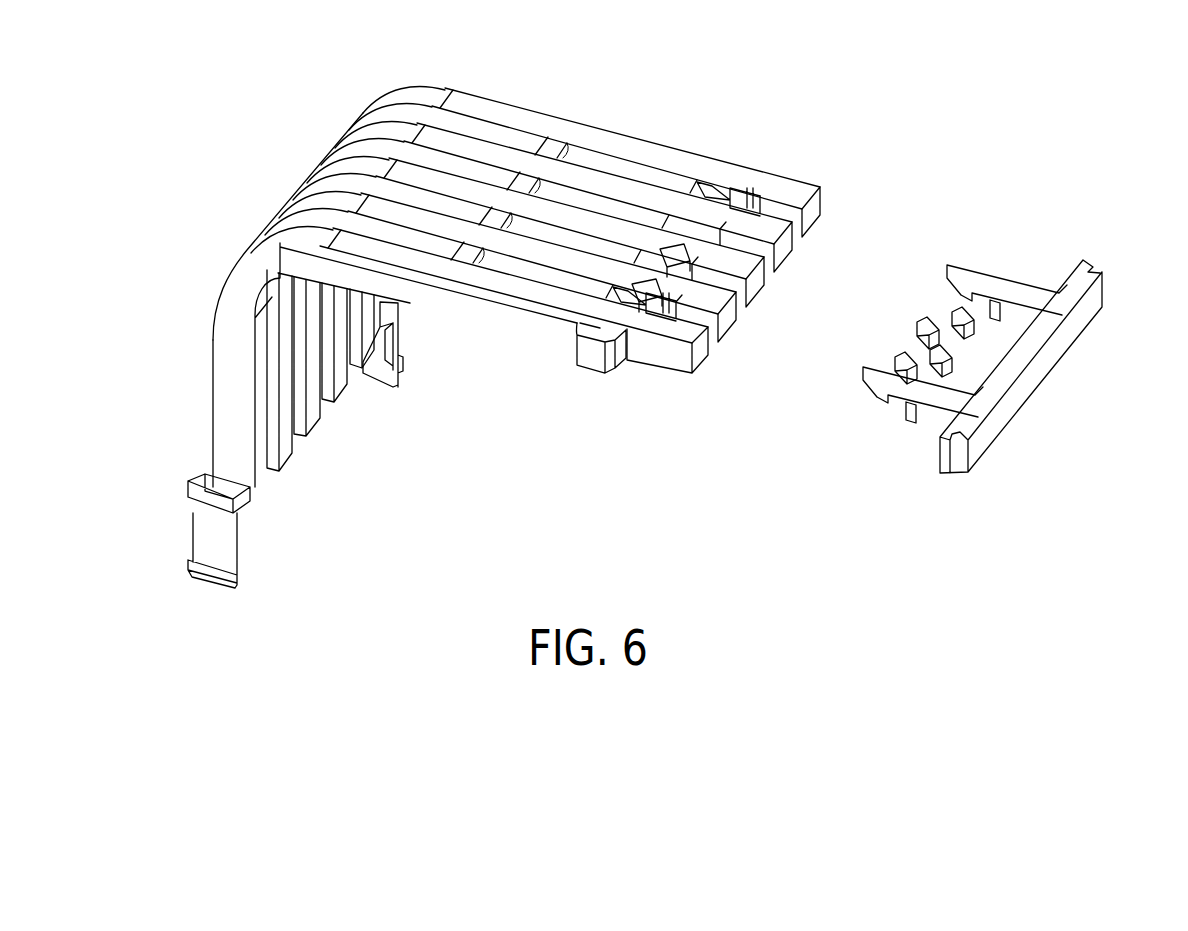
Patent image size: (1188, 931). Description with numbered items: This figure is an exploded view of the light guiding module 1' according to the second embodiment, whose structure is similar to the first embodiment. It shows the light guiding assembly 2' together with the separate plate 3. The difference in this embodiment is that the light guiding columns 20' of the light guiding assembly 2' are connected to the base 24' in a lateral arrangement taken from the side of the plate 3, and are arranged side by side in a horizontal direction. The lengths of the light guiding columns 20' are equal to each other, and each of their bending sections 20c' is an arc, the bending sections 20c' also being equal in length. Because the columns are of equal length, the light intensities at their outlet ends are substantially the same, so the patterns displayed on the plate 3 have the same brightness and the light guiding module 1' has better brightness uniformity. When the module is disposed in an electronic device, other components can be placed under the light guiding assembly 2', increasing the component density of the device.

The light guiding module 1' is at (620, 306).
The light guiding assembly 2' is at (502, 326).
The light guiding columns 20' is at (759, 274).
The bending sections 20c' is at (297, 169).
The base 24' is at (175, 505).
The plate 3 is at (1053, 312).